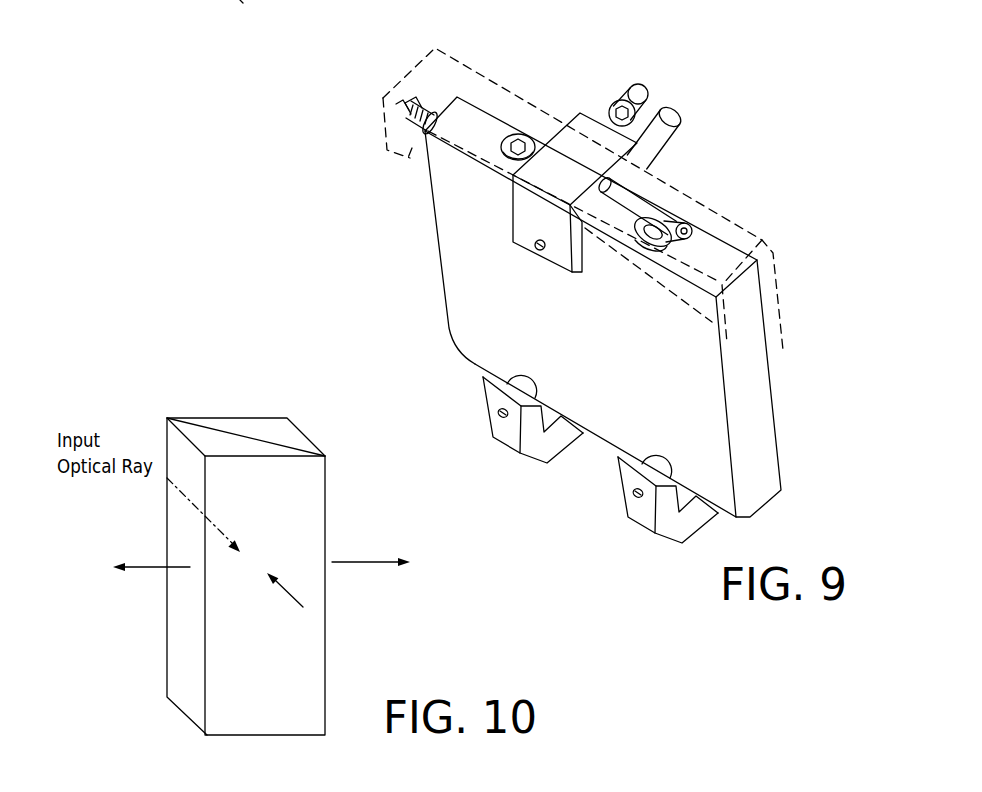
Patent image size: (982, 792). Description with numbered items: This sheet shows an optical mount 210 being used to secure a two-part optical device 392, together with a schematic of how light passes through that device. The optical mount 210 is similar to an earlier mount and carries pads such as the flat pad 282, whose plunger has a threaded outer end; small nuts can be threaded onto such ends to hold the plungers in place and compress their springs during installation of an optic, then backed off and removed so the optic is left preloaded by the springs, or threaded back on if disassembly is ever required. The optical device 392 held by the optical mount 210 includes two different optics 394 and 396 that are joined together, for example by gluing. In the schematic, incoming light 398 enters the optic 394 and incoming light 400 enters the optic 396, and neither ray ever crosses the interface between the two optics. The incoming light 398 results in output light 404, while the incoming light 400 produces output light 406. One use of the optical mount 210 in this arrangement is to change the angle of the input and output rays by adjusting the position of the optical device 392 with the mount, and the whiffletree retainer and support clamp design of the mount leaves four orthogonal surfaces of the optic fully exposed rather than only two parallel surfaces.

In FIG. 9, the optical mount 210 is at (367, 73).
In FIG. 9, the flat pad 282 is at (224, 19).
In FIG. 9, the optical device 392 is at (592, 320).
In FIG. 10, the optical device 392 is at (216, 536).
In FIG. 9, the optic 394 is at (433, 238).
In FIG. 10, the optic 394 is at (198, 437).
In FIG. 9, the optic 396 is at (761, 357).
In FIG. 10, the optic 396 is at (287, 430).
In FIG. 10, the incoming light 398 is at (275, 577).
In FIG. 10, the incoming light 400 is at (193, 503).
In FIG. 10, the output light 404 is at (148, 568).
In FIG. 10, the output light 406 is at (373, 565).